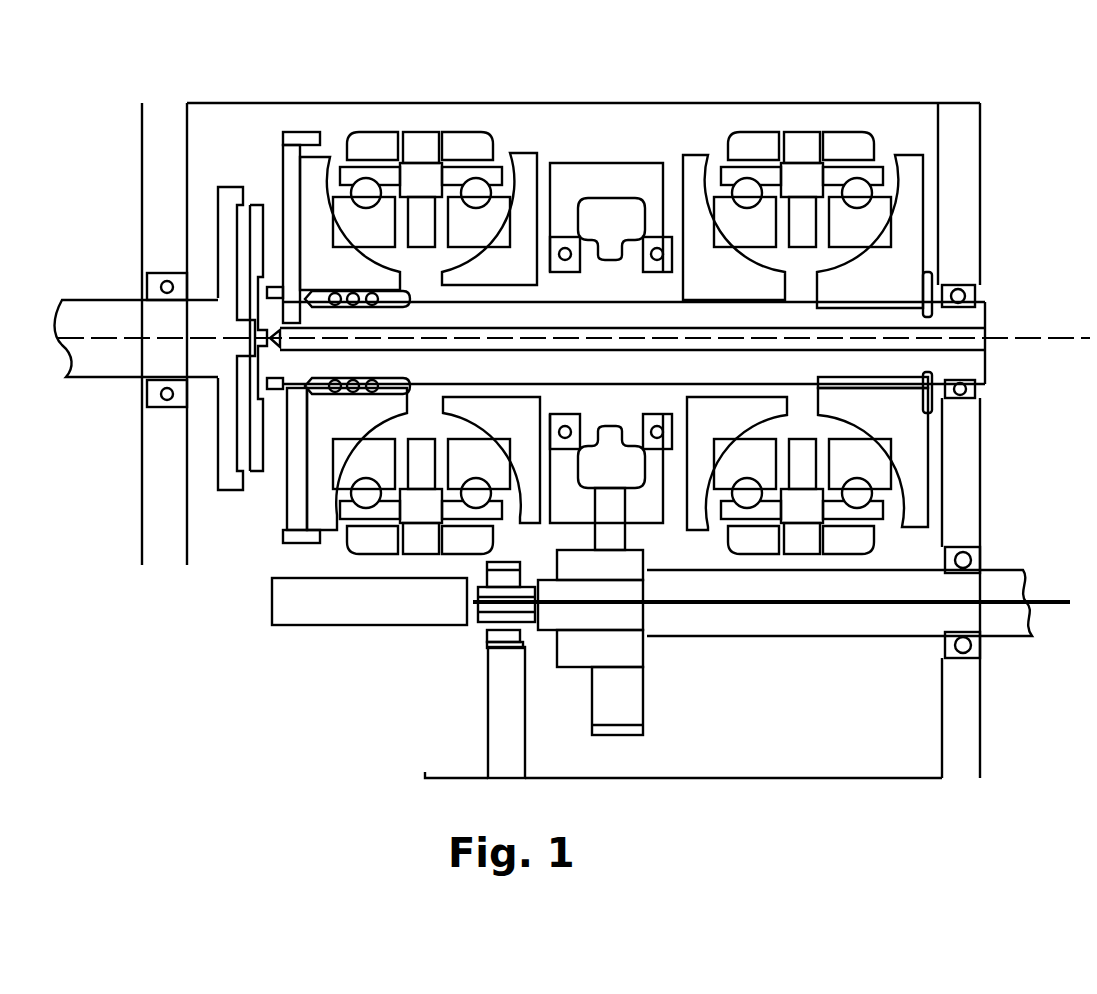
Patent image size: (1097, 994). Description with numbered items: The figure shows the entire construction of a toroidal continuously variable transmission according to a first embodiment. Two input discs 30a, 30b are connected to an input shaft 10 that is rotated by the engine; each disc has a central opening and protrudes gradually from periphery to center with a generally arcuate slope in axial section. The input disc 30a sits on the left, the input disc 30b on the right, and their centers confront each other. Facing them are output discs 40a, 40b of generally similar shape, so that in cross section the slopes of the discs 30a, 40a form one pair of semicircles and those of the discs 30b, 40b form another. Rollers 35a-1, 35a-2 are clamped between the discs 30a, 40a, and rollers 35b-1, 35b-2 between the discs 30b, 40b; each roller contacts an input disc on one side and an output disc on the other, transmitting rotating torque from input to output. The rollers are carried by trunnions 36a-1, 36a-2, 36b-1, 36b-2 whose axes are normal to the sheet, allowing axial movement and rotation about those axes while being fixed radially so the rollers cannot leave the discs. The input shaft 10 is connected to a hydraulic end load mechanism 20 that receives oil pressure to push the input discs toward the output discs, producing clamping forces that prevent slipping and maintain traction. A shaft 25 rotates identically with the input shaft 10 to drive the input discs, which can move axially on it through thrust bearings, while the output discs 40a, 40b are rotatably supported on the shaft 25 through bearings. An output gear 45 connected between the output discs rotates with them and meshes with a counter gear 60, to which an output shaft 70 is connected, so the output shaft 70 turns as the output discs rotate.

The input shaft 10 is at (130, 325).
The hydraulic push (end load) mechanism 20 is at (268, 190).
The shaft 25 is at (962, 365).
The input disc 30a is at (318, 192).
The input disc 30b is at (910, 184).
The output disc 40a is at (527, 196).
The output disc 40b is at (696, 192).
The roller 35a-1 is at (361, 218).
The roller 35a-2 is at (372, 462).
The roller 35b-1 is at (742, 218).
The roller 35b-2 is at (745, 460).
The trunnion 36a-1 is at (462, 148).
The trunnion 36a-2 is at (463, 545).
The trunnion 36b-1 is at (845, 150).
The trunnion 36b-2 is at (852, 540).
The output gear 45 is at (612, 216).
The counter gear 60 is at (608, 712).
The output shaft 70 is at (1002, 612).